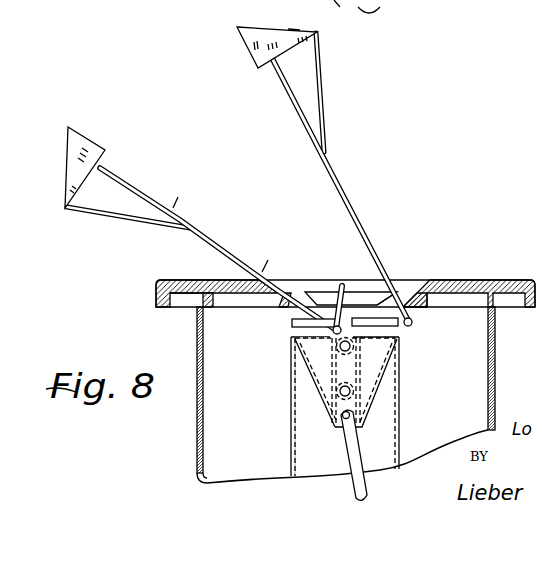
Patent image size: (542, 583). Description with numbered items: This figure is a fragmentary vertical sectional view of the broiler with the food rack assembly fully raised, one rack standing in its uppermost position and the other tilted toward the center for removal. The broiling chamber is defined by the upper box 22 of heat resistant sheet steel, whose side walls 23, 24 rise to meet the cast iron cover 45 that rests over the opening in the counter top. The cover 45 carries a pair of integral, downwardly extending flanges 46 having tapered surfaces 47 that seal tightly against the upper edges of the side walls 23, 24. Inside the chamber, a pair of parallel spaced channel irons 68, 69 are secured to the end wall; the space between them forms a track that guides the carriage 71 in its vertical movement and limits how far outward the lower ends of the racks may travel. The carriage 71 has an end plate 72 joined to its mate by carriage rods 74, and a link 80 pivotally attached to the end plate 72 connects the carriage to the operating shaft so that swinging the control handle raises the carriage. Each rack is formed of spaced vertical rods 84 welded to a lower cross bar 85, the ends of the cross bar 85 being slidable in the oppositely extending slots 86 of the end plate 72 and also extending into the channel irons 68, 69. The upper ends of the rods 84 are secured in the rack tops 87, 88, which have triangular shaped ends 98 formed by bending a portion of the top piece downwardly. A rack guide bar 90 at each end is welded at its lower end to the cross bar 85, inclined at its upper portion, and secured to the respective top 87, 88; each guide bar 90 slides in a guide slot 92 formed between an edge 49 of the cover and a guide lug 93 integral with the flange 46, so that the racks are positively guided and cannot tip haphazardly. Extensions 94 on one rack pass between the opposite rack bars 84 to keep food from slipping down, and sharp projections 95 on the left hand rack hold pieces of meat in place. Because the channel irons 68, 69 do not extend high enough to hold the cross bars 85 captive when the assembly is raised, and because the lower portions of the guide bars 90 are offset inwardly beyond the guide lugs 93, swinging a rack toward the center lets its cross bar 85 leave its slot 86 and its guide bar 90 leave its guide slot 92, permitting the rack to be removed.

The upper box 22 is at (497, 378).
The side wall 23 is at (197, 356).
The side wall 24 is at (496, 341).
The cover 45 is at (157, 284).
The flange 46 is at (211, 308).
The tapered surface 47 is at (208, 293).
The edge 49 is at (279, 306).
The channel iron 68 is at (292, 410).
The channel iron 69 is at (404, 414).
The carriage 71 is at (400, 353).
The end plate 72 is at (376, 382).
The carriage rod 74 is at (352, 389).
The link 80 is at (365, 488).
The vertical rod 84 is at (128, 187).
The cross bar 85 is at (332, 337).
The slot 86 is at (292, 332).
The top 87 is at (208, 178).
The top 88 is at (293, 29).
The rack guide bar 90 is at (97, 209).
The guide slot 92 is at (397, 300).
The guide lug 93 is at (352, 301).
The extension 94 is at (339, 284).
The sharp projection 95 is at (176, 200).
The triangular shaped end 98 is at (72, 144).